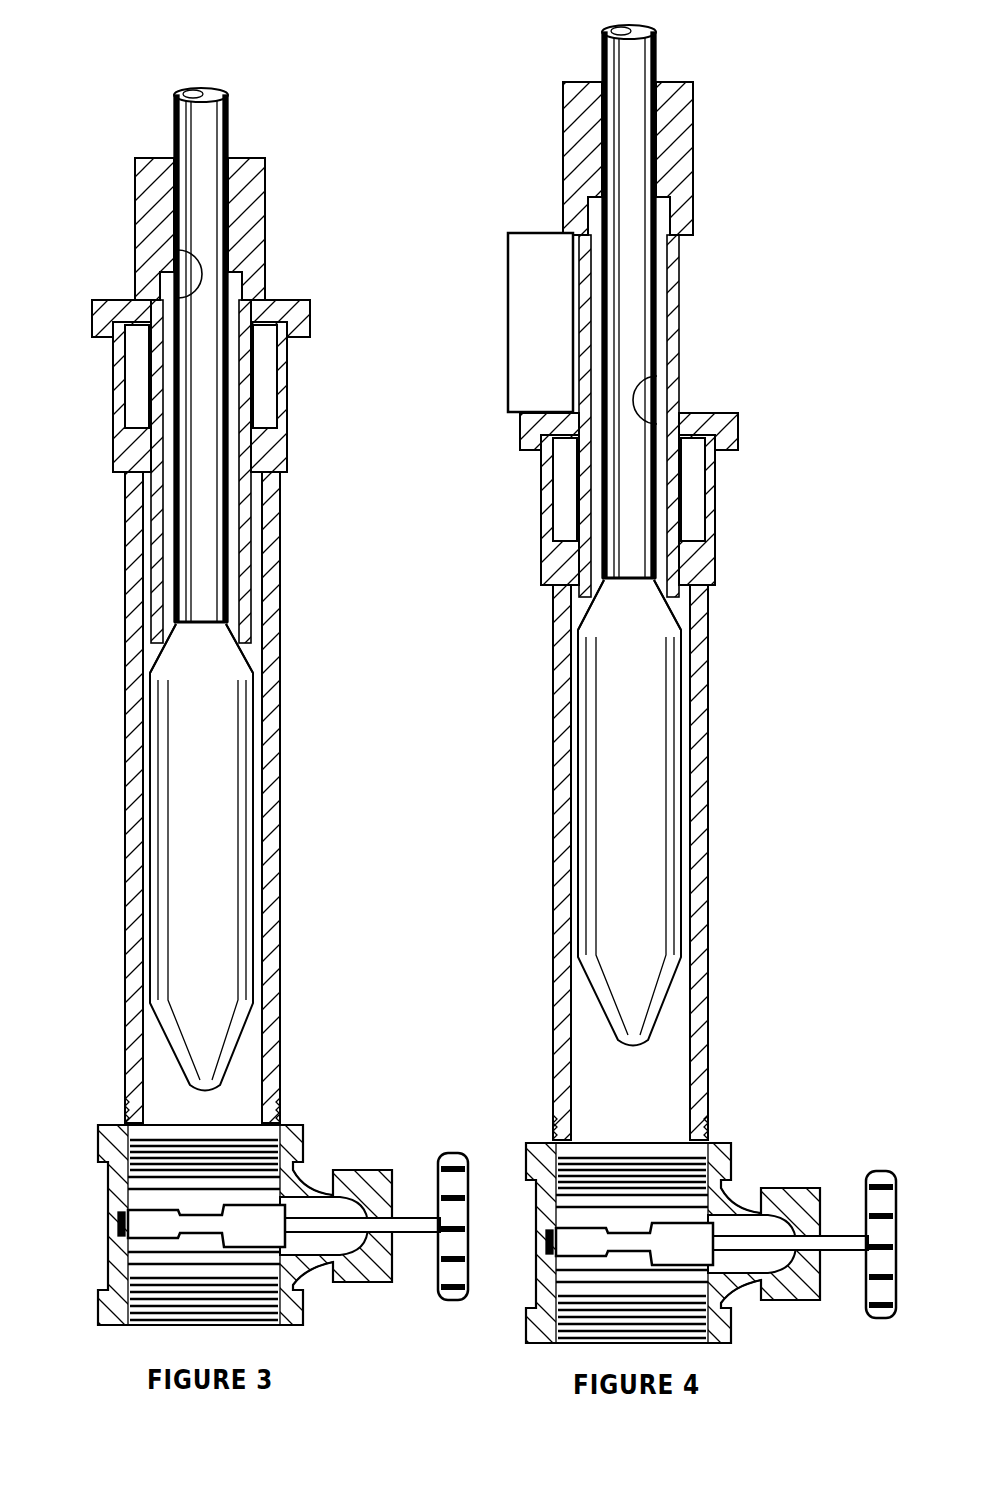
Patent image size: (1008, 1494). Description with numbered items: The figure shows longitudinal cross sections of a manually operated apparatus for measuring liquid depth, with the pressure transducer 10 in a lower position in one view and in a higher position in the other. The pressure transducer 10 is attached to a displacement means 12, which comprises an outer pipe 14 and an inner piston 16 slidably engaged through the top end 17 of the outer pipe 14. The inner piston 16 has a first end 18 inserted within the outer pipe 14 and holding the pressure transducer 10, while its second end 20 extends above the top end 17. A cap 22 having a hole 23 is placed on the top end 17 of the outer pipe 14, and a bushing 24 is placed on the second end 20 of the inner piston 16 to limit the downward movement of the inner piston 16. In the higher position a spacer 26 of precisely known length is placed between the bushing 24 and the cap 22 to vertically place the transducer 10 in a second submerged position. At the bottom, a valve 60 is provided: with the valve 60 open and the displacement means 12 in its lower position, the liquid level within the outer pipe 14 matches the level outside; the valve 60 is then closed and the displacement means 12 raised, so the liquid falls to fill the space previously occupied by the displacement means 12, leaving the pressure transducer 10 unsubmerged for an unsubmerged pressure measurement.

In FIG. 3, the pressure transducer 10 is at (236, 108).
In FIG. 4, the pressure transducer 10 is at (656, 65).
In FIG. 3, the displacement means 12 is at (112, 567).
In FIG. 4, the displacement means 12 is at (755, 412).
In FIG. 3, the outer pipe 14 is at (278, 863).
In FIG. 4, the outer pipe 14 is at (707, 745).
In FIG. 3, the inner piston 16 is at (253, 560).
In FIG. 4, the inner piston 16 is at (679, 292).
In FIG. 3, the top end 17 is at (123, 425).
In FIG. 4, the top end 17 is at (545, 533).
In FIG. 3, the first end 18 is at (237, 642).
In FIG. 4, the first end 18 is at (673, 597).
In FIG. 3, the second end 20 is at (230, 270).
In FIG. 4, the second end 20 is at (660, 192).
In FIG. 3, the cap 22 is at (288, 407).
In FIG. 4, the cap 22 is at (717, 487).
In FIG. 3, the hole 23 is at (182, 250).
In FIG. 4, the hole 23 is at (650, 372).
In FIG. 3, the bushing 24 is at (265, 200).
In FIG. 4, the bushing 24 is at (693, 123).
In FIG. 4, the spacer 26 is at (510, 335).
In FIG. 3, the valve 60 is at (358, 1132).
In FIG. 4, the valve 60 is at (760, 1153).